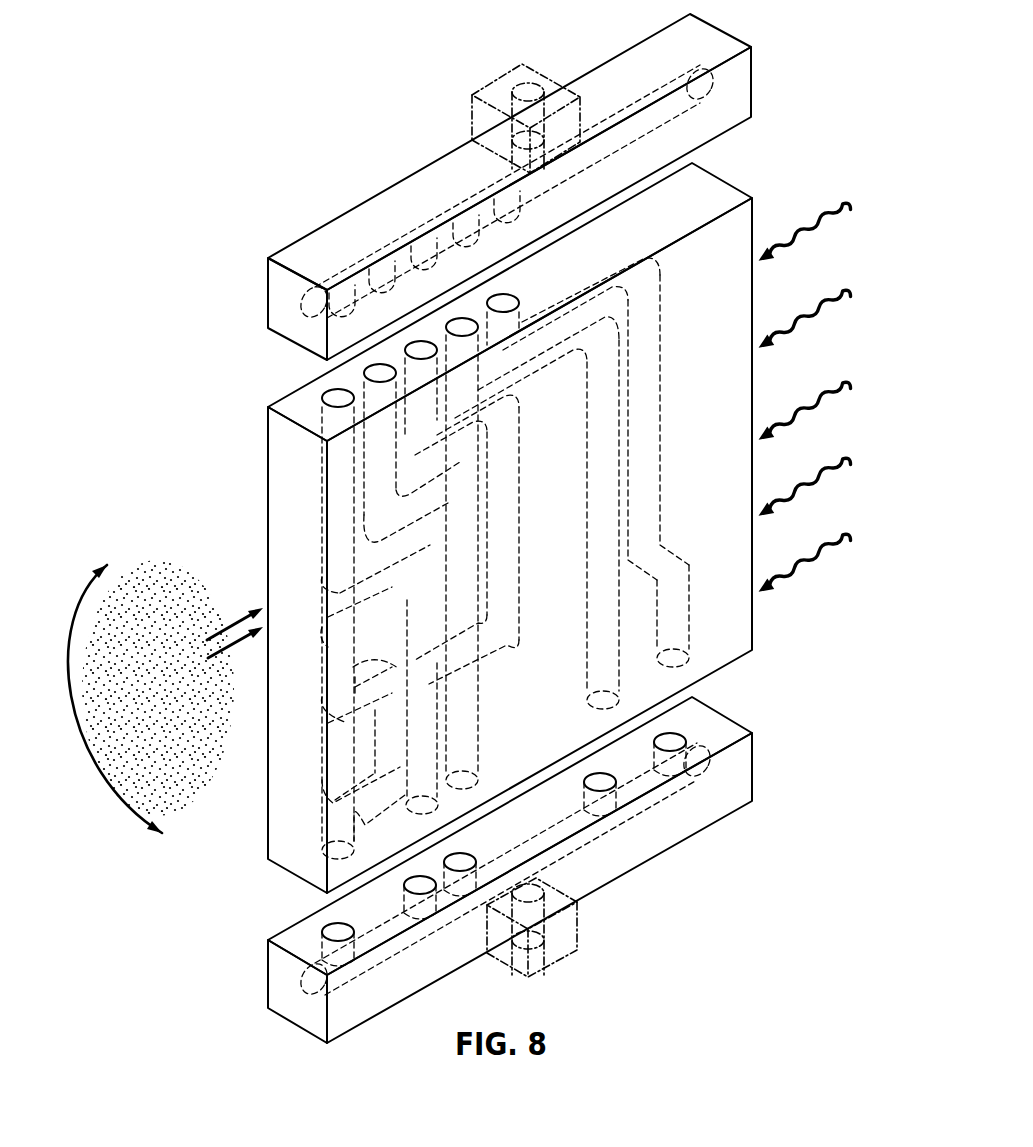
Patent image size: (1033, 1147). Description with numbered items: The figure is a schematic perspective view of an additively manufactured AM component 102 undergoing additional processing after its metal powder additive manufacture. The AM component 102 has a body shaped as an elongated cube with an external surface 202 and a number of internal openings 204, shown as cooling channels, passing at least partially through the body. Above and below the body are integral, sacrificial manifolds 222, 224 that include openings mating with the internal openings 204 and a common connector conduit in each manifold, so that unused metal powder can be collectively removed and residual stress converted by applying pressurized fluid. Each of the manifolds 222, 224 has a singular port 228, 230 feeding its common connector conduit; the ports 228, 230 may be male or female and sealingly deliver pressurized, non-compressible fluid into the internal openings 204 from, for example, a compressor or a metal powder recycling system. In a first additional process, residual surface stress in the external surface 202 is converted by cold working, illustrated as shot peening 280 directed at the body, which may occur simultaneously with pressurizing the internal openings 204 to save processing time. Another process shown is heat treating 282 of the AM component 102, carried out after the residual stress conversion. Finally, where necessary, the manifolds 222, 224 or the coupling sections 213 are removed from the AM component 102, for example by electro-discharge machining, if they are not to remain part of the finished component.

The AM component 102 is at (770, 218).
The external surface 202 is at (567, 573).
The internal opening 204 is at (337, 392).
The coupling section 213 is at (557, 528).
The manifold 222 is at (710, 105).
The manifold 224 is at (728, 735).
The port 228 is at (500, 73).
The port 230 is at (560, 958).
The shot peening 280 is at (150, 603).
The heat treating 282 is at (816, 226).